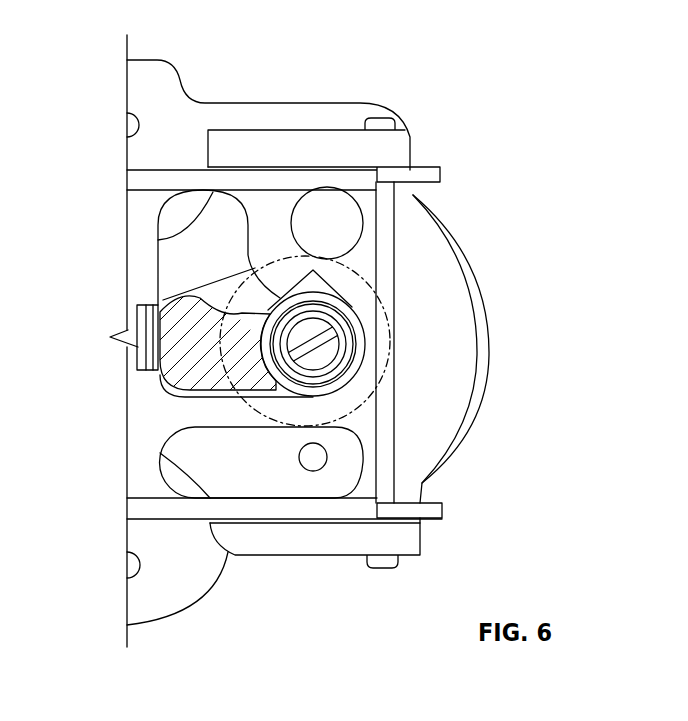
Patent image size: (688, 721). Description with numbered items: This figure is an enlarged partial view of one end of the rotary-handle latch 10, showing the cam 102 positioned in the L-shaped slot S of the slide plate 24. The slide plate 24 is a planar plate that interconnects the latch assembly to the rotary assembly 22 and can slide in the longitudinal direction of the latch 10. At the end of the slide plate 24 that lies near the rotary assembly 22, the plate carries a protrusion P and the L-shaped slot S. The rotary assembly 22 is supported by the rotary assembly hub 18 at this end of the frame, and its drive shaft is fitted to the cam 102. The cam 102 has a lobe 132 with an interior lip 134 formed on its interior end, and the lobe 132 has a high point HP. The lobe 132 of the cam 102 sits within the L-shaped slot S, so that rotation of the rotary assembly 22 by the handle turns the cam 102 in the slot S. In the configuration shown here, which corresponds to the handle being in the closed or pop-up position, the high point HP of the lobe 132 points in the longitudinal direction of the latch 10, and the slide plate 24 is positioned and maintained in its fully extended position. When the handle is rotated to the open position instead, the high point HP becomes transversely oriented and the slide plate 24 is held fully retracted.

The latch 10 is at (532, 84).
The L-shaped slot S is at (170, 266).
The protrusion P is at (150, 320).
The high point HP is at (140, 349).
The cam 102 is at (180, 393).
The lobe 132 is at (193, 353).
The slide plate 24 is at (173, 507).
The interior lip 134 is at (400, 353).
The rotary assembly 22 is at (462, 333).
The rotary assembly hub 18 is at (467, 285).